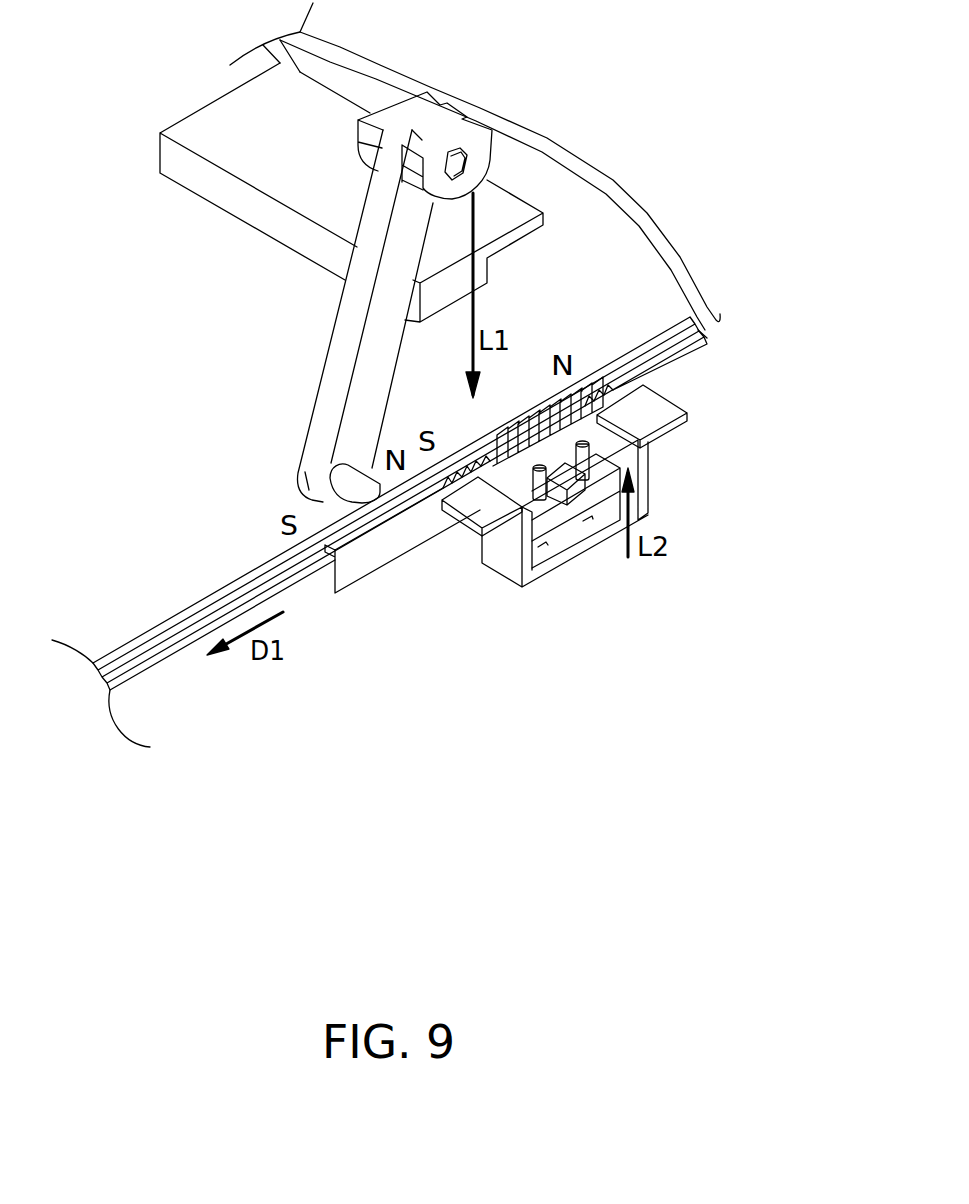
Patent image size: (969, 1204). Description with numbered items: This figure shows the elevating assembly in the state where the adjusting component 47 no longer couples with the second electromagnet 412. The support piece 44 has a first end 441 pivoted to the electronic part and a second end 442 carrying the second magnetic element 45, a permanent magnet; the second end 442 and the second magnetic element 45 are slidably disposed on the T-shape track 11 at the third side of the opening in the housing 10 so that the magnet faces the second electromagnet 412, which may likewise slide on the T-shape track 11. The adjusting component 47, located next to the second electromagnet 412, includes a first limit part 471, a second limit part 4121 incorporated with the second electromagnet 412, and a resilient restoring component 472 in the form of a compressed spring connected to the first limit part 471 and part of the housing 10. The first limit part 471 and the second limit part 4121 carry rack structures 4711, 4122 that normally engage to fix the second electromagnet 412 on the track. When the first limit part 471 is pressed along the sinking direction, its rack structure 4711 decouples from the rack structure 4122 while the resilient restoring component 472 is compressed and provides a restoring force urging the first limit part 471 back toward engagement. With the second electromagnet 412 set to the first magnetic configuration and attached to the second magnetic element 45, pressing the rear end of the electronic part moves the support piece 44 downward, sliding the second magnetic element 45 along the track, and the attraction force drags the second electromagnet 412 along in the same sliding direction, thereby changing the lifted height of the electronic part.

The housing 10 is at (643, 477).
The T-shape track 11 is at (143, 663).
The support piece 44 is at (367, 358).
The second magnetic element 45 is at (357, 563).
The adjusting component 47 is at (544, 573).
The second electromagnet 412 is at (606, 395).
The first end 441 is at (440, 125).
The second end 442 is at (343, 483).
The first limit part 471 is at (535, 545).
The resilient restoring component 472 is at (542, 546).
The second limit part 4121 is at (557, 427).
The rack structure 4122 is at (600, 437).
The rack structure 4711 is at (535, 474).